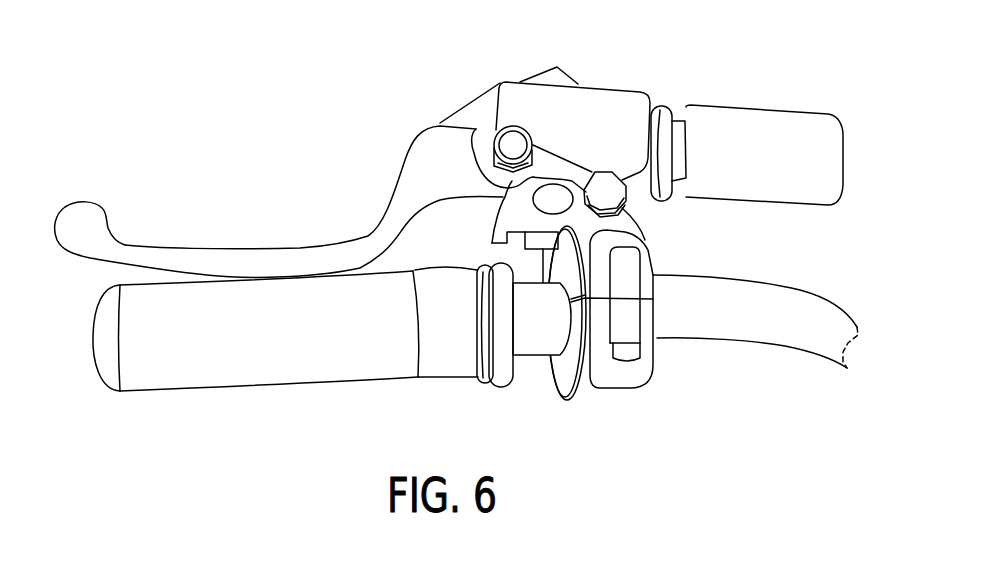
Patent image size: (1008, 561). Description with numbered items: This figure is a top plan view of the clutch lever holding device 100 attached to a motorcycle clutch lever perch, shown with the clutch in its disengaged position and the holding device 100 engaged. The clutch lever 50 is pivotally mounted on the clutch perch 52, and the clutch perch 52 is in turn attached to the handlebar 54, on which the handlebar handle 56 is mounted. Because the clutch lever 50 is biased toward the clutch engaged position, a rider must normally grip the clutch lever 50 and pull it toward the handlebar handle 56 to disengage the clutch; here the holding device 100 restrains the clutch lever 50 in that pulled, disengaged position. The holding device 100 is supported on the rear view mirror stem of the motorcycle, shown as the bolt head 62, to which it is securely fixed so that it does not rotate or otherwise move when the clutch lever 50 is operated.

The clutch lever 50 is at (226, 226).
The clutch perch 52 is at (570, 107).
The handlebar 54 is at (772, 329).
The handlebar handle 56 is at (233, 363).
The bolt head 62 is at (604, 180).
The clutch lever holding device 100 is at (493, 131).